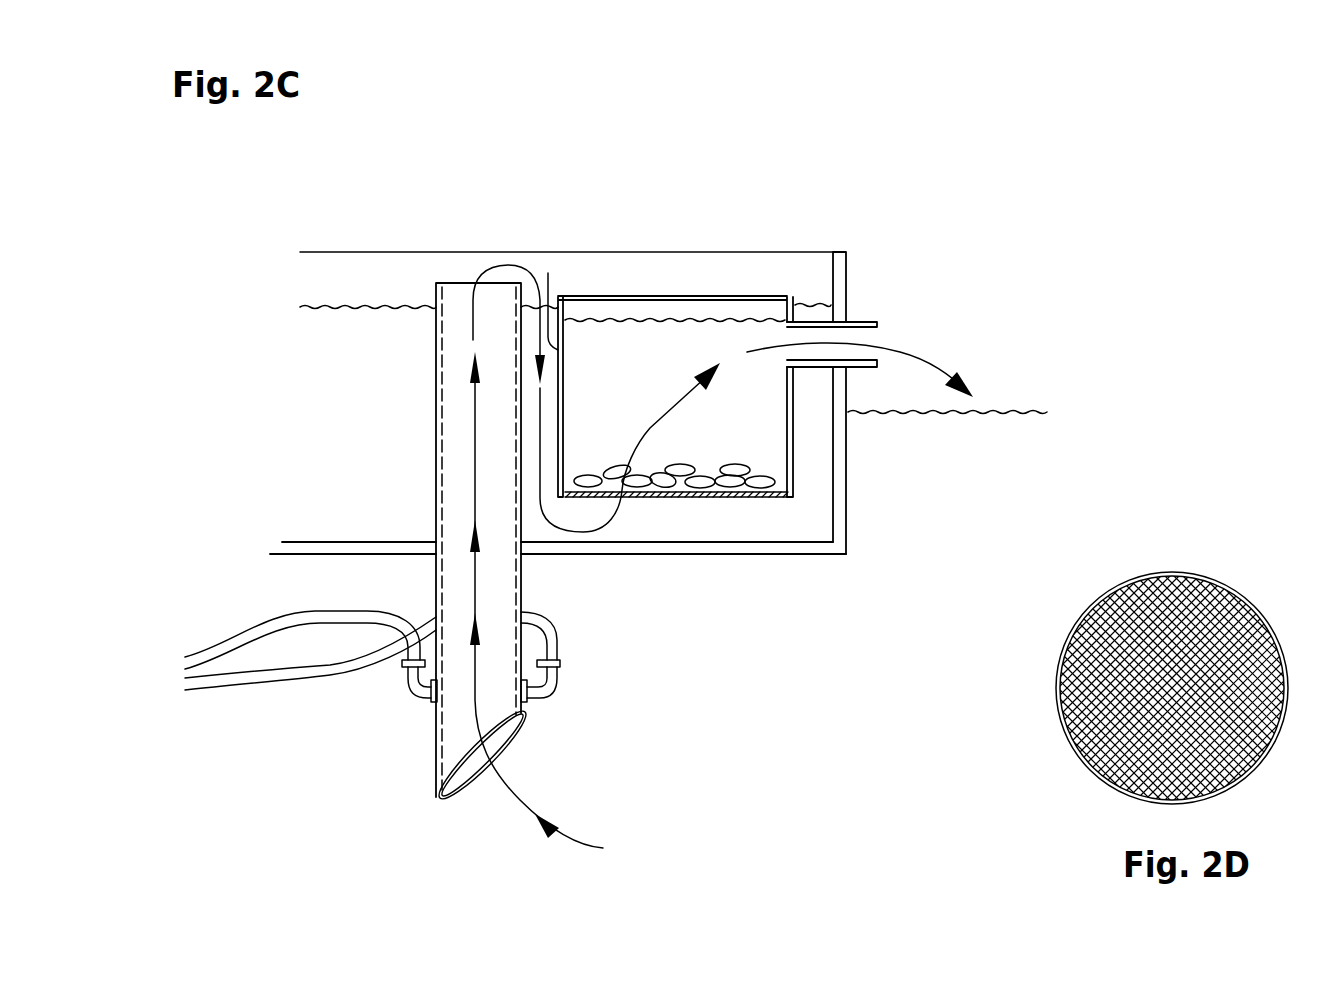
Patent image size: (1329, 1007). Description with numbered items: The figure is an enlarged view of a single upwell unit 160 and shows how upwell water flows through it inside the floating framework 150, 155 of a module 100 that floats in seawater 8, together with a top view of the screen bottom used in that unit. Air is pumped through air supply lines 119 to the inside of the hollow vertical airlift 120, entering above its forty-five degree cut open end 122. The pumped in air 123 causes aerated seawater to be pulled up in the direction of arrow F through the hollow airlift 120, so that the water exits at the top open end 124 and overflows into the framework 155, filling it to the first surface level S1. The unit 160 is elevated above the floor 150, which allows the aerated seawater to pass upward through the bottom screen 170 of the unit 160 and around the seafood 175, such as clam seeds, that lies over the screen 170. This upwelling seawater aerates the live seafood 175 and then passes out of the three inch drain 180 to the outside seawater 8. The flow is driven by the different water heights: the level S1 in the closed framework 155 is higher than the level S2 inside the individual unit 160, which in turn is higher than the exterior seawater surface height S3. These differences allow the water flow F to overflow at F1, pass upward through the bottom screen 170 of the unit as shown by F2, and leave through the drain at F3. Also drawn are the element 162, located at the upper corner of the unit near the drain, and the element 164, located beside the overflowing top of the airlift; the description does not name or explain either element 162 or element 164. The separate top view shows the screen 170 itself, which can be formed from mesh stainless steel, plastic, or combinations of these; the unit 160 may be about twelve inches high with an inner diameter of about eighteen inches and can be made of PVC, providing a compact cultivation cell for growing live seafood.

In FIG. 2C, the module 100 is at (913, 160).
In FIG. 2C, the air supply lines 119 is at (330, 670).
In FIG. 2C, the hollow vertical airlift 120 is at (482, 480).
In FIG. 2C, the 45 degree cut open end 122 is at (508, 723).
In FIG. 2C, the pumped in air 123 is at (505, 647).
In FIG. 2C, the top open end 124 is at (438, 303).
In FIG. 2C, the floor 150 is at (622, 421).
In FIG. 2C, the framework 155 is at (830, 290).
In FIG. 2C, the upwell unit 160 is at (768, 381).
In FIG. 2C, the overflow compartment 162 is at (795, 298).
In FIG. 2C, the baffle 164 is at (548, 273).
In FIG. 2C, the bottom screen 170 is at (777, 496).
In FIG. 2D, the bottom screen 170 is at (1210, 600).
In FIG. 2C, the seafood 175 is at (733, 483).
In FIG. 2C, the drain 180 is at (877, 320).
In FIG. 2C, the seawater 8 is at (973, 485).
In FIG. 2C, the first surface level S1 is at (362, 298).
In FIG. 2C, the water height in the unit S2 is at (585, 318).
In FIG. 2C, the exterior seawater surface height S3 is at (1007, 410).
In FIG. 2C, the water flow F is at (475, 538).
In FIG. 2C, the overflow flow F1 is at (517, 263).
In FIG. 2C, the screen flow F2 is at (672, 400).
In FIG. 2C, the drain flow F3 is at (897, 350).